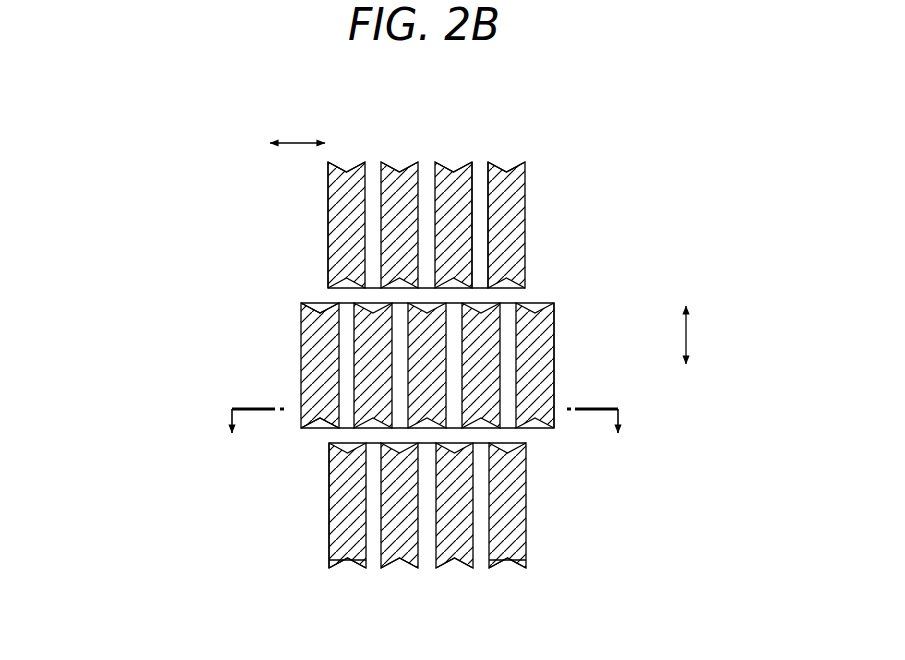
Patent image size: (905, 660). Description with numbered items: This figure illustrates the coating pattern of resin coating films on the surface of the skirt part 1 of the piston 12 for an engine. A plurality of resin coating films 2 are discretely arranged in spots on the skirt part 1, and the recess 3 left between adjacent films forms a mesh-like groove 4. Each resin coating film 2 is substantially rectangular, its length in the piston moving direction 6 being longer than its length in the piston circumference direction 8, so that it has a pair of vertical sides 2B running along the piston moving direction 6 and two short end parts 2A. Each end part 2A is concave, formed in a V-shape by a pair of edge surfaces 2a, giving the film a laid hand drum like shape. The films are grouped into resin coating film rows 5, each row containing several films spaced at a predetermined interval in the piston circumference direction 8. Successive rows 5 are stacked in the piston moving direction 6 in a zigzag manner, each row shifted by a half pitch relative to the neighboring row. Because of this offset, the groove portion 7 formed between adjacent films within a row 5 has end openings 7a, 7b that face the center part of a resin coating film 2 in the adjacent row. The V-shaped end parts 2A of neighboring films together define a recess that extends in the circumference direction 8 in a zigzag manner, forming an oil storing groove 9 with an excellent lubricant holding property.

The skirt part 1 is at (458, 366).
The piston 12 is at (558, 190).
The resin coating film 2 is at (298, 393).
The end part 2A is at (346, 172).
The edge surface 2a is at (506, 172).
The vertical side 2B is at (408, 564).
The recess 3 is at (481, 176).
The mesh-like groove 4 is at (503, 196).
The resin coating film row 5 is at (326, 216).
The piston moving direction 6 is at (688, 335).
The groove portion 7 is at (338, 365).
The end opening 7a is at (347, 311).
The end opening 7b is at (328, 458).
The piston circumference direction 8 is at (297, 148).
The oil storing groove 9 is at (530, 295).